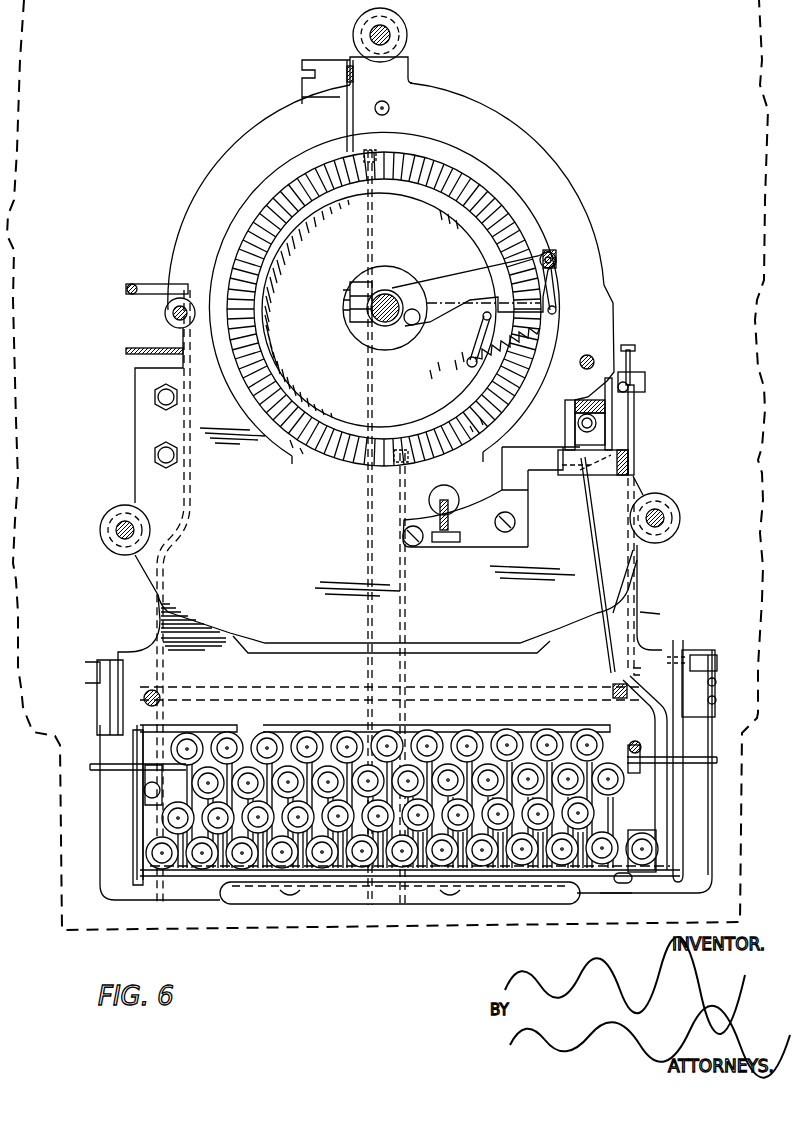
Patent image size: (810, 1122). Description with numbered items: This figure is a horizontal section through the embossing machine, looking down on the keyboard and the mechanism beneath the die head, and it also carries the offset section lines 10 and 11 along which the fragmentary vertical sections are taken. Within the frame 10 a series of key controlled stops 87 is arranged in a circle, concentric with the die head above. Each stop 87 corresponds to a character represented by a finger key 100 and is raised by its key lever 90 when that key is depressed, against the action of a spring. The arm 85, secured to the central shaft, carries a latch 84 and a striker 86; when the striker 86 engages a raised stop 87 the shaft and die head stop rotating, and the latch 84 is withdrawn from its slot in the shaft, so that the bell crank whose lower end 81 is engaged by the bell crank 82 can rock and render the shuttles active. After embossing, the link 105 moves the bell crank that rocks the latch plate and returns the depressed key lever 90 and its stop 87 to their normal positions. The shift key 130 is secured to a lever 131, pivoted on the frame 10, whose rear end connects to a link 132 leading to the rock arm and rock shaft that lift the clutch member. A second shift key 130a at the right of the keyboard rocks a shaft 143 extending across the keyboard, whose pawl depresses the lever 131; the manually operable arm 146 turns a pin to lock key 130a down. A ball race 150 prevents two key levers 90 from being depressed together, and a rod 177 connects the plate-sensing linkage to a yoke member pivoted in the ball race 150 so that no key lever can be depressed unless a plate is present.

The frame 10 is at (670, 913).
The section line 11- 11 is at (180, 948).
The lower end of bell crank 81 is at (548, 335).
The bell crank 82 is at (136, 352).
The latch 84 is at (468, 332).
The arm 85 is at (446, 290).
The striker 86 is at (545, 296).
The key controlled stop 87 is at (508, 393).
The key lever 90 is at (388, 884).
The finger key 100 is at (397, 872).
The link 105 is at (606, 588).
The shift key 130 is at (163, 866).
The second shift key 130a is at (658, 843).
The lever 131 is at (192, 500).
The link 132 is at (126, 283).
The shaft 143 is at (719, 759).
The manually operable arm 146 is at (622, 884).
The ball race 150 is at (522, 668).
The rod 177 is at (636, 429).